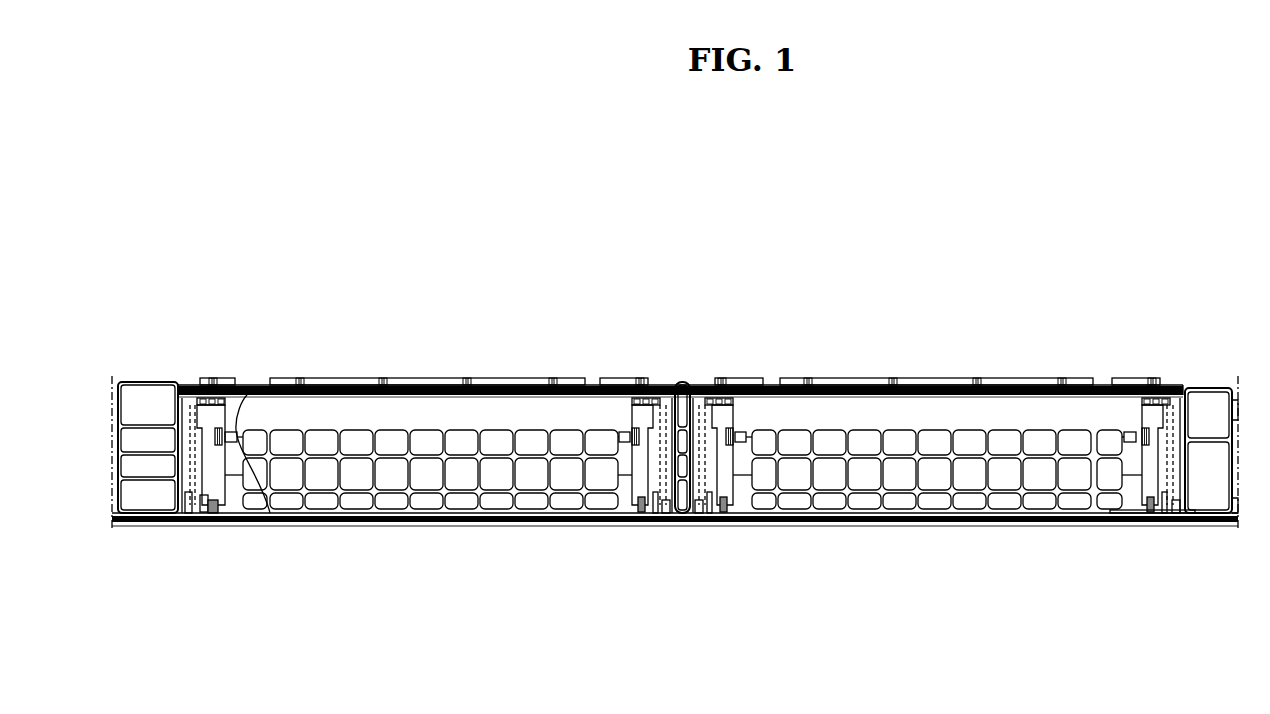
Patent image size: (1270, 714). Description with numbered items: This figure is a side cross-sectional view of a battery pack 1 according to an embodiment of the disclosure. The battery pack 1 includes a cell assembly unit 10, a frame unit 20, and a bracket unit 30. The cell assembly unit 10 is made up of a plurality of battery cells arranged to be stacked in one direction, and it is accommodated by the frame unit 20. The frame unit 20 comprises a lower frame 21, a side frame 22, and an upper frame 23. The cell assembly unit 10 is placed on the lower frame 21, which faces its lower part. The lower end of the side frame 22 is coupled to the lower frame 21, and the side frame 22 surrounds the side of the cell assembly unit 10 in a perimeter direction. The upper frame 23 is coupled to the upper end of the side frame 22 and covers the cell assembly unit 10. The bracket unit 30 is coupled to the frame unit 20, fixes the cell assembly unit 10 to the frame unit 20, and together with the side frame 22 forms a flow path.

The battery pack 1 is at (146, 303).
The cell assembly unit 10 is at (357, 408).
The frame unit 20 is at (97, 603).
The lower frame 21 is at (183, 523).
The side frame 22 is at (118, 478).
The upper frame 23 is at (270, 522).
The bracket unit 30 is at (215, 458).